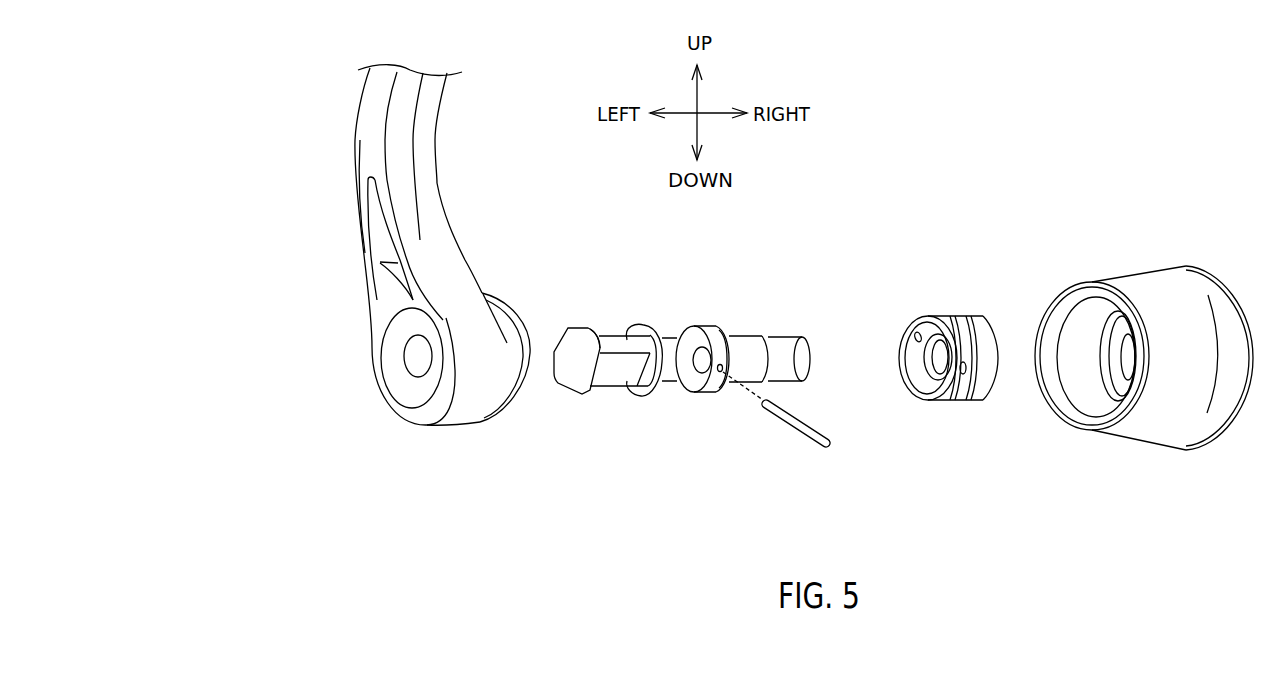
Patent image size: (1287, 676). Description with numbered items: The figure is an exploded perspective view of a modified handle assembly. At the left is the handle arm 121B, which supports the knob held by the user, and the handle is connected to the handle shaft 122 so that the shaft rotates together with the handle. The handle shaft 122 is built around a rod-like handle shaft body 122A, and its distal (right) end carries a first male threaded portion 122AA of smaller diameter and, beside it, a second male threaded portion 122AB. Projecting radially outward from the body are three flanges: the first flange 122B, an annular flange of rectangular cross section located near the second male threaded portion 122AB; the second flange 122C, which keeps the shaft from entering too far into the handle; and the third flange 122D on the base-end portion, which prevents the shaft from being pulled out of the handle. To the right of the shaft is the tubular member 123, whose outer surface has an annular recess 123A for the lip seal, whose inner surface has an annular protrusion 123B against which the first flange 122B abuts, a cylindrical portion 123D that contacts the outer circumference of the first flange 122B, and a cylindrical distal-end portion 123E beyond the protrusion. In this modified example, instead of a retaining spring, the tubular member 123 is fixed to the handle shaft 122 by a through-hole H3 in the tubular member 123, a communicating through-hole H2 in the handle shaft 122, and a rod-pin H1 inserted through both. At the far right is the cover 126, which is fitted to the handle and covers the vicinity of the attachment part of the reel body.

The handle arm 121B is at (380, 307).
The handle shaft 122 is at (693, 383).
The handle shaft body 122A is at (554, 350).
The first male threaded portion 122AA is at (785, 345).
The second male threaded portion 122AB is at (733, 343).
The first flange 122B is at (707, 330).
The second flange 122C is at (628, 392).
The third flange 122D is at (568, 390).
The rod-pin H1 is at (792, 430).
The through-hole H2 is at (712, 390).
The tubular member 123 is at (947, 383).
The annular recess 123A is at (967, 400).
The annular protrusion 123B is at (925, 360).
The cylindrical portion 123D is at (947, 317).
The distal-end portion 123E is at (988, 382).
The through-hole H3 is at (962, 374).
The cover 126 is at (1138, 288).